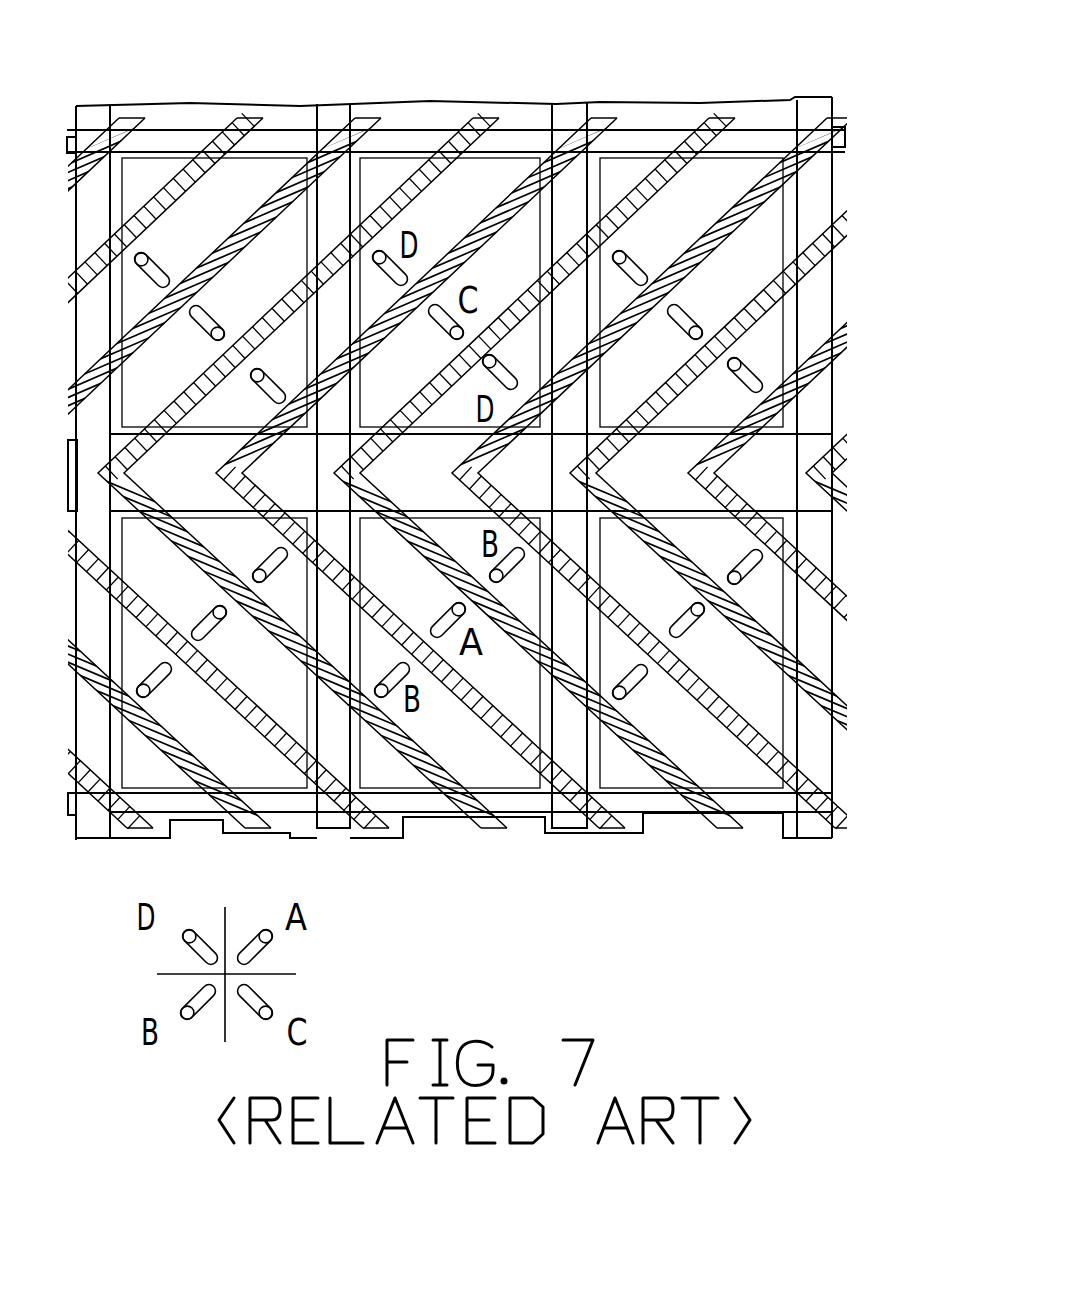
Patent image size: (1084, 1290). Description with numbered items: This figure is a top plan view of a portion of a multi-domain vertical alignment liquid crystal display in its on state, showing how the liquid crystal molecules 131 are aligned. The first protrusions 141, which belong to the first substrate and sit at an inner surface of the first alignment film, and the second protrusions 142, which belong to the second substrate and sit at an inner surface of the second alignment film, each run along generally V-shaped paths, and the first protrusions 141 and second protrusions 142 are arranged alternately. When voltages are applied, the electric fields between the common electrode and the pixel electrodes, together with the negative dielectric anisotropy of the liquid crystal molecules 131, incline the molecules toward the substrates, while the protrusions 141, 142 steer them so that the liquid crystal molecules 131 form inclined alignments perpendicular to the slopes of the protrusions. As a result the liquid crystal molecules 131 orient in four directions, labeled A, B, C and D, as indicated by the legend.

The liquid crystal molecules 131 is at (753, 380).
The first protrusions 141 is at (582, 106).
The second protrusions 142 is at (706, 106).